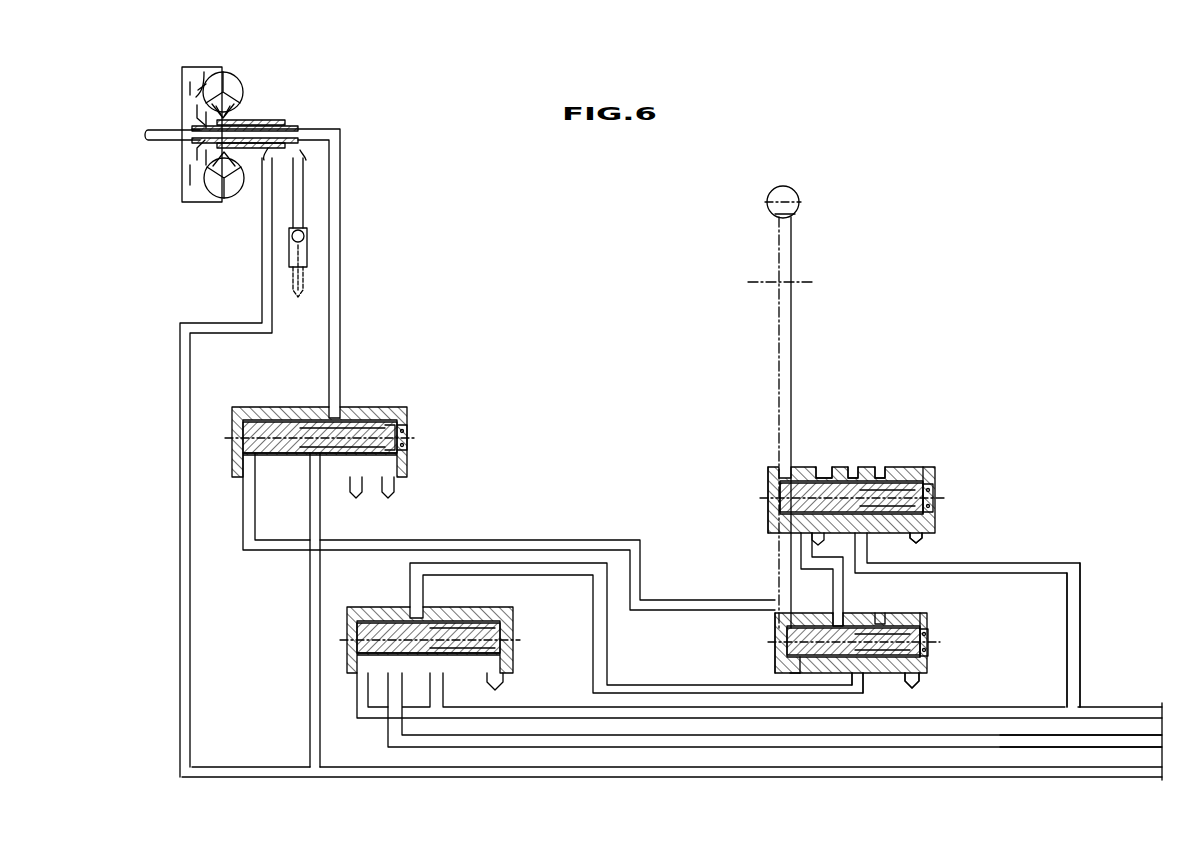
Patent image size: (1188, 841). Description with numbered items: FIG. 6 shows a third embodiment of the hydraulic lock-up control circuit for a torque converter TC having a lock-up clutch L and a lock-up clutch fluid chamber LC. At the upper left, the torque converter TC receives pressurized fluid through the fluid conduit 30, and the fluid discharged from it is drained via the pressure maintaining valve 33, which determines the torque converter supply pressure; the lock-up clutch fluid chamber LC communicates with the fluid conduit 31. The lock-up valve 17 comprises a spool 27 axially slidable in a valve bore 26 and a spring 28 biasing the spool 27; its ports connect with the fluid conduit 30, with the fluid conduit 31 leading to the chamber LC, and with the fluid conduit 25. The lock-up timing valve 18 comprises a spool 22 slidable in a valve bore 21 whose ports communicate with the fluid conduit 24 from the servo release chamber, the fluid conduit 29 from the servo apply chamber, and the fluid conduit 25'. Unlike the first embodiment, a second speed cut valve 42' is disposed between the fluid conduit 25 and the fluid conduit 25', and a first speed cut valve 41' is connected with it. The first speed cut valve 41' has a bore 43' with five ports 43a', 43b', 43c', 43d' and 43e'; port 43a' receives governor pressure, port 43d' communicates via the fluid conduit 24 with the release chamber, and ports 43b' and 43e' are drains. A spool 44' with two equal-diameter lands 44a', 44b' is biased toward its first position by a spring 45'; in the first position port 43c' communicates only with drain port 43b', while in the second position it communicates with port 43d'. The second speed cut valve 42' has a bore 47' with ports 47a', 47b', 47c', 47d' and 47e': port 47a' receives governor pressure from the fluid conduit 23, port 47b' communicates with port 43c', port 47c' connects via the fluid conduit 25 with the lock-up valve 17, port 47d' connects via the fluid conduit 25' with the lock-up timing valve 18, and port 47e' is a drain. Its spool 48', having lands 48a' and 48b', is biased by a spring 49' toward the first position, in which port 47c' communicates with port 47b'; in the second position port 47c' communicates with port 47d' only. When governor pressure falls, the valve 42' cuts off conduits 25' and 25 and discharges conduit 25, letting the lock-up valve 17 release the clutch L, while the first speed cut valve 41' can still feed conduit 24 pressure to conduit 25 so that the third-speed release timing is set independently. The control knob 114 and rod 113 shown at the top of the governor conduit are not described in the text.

The lock-up valve 17 is at (372, 405).
The lock-up timing valve 18 is at (490, 600).
The valve bore 21 is at (360, 652).
The spool 22 is at (423, 655).
The governor pressure fluid conduit 23 is at (464, 630).
The fluid conduit 24 is at (1094, 710).
The fluid conduit 25 is at (340, 610).
The fluid conduit 25' is at (636, 628).
The valve bore 26 is at (244, 448).
The spool 27 is at (260, 410).
The spring 28 is at (405, 430).
The fluid conduit 29 is at (1140, 735).
The fluid conduit 30 is at (1094, 768).
The fluid conduit 31 is at (340, 292).
The pressure maintaining valve 33 is at (310, 247).
The first speed cut valve 41' is at (861, 484).
The second speed cut valve 42' is at (870, 634).
The bore 43' is at (826, 505).
The port 43a' is at (735, 481).
The drain port 43b' is at (825, 448).
The port 43c' is at (856, 460).
The port 43d' is at (900, 448).
The drain port 43e' is at (970, 477).
The spool 44' is at (967, 613).
The land 44a' is at (786, 566).
The land 44b' is at (948, 531).
The spring 45' is at (947, 492).
The bore 47' is at (825, 647).
The port 47a' is at (747, 643).
The port 47b' is at (743, 670).
The port 47c' is at (852, 603).
The port 47d' is at (899, 607).
The drain port 47e' is at (955, 641).
The spool 48' is at (876, 684).
The land 48a' is at (765, 624).
The land 48b' is at (945, 686).
The spring 49' is at (946, 637).
The control rod 113 is at (772, 216).
The knob 114 is at (770, 193).
The lock-up clutch L is at (198, 72).
The lock-up clutch fluid chamber LC is at (182, 107).
The torque converter TC is at (180, 183).